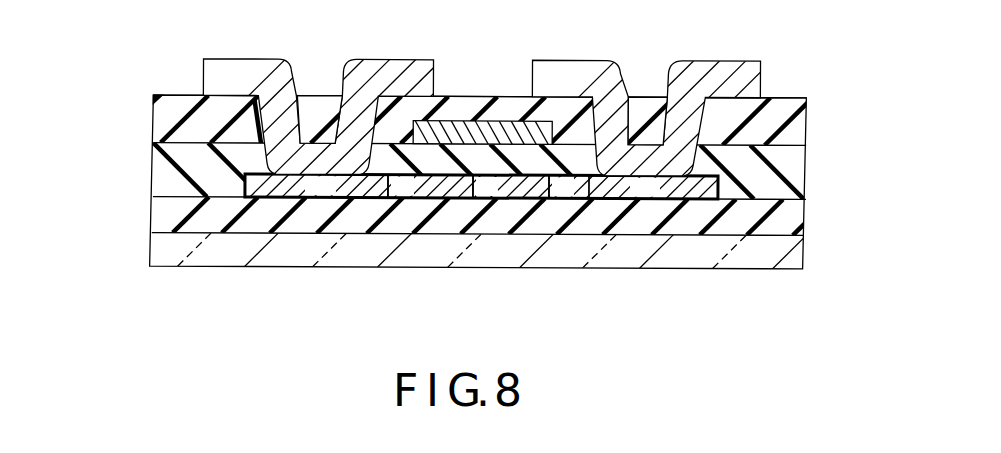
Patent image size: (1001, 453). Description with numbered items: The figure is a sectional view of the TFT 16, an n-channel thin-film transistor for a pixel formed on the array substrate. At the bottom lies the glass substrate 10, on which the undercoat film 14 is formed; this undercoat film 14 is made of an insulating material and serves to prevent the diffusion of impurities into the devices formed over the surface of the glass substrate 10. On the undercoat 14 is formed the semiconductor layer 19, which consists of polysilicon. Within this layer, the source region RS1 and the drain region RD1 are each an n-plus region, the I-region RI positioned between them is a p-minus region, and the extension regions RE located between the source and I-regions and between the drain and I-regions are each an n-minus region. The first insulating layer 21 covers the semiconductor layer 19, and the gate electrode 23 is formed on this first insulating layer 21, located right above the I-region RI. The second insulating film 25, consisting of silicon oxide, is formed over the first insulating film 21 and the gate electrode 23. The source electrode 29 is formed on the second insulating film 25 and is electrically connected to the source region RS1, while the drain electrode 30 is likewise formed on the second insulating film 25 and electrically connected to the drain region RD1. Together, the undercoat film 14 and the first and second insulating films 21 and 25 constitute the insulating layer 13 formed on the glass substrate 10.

The glass substrate 10 is at (787, 258).
The insulating layer 13 is at (73, 108).
The undercoat film 14 is at (150, 217).
The TFT 16 is at (449, 166).
The semiconductor layer 19 is at (555, 239).
The first insulating layer 21 is at (150, 168).
The gate electrode 23 is at (481, 117).
The second insulating film 25 is at (150, 115).
The source electrode 29 is at (264, 58).
The drain electrode 30 is at (705, 58).
The source region RS1 is at (285, 199).
The extension regions RE is at (405, 199).
The I-region RI is at (492, 199).
The drain region RD1 is at (693, 199).